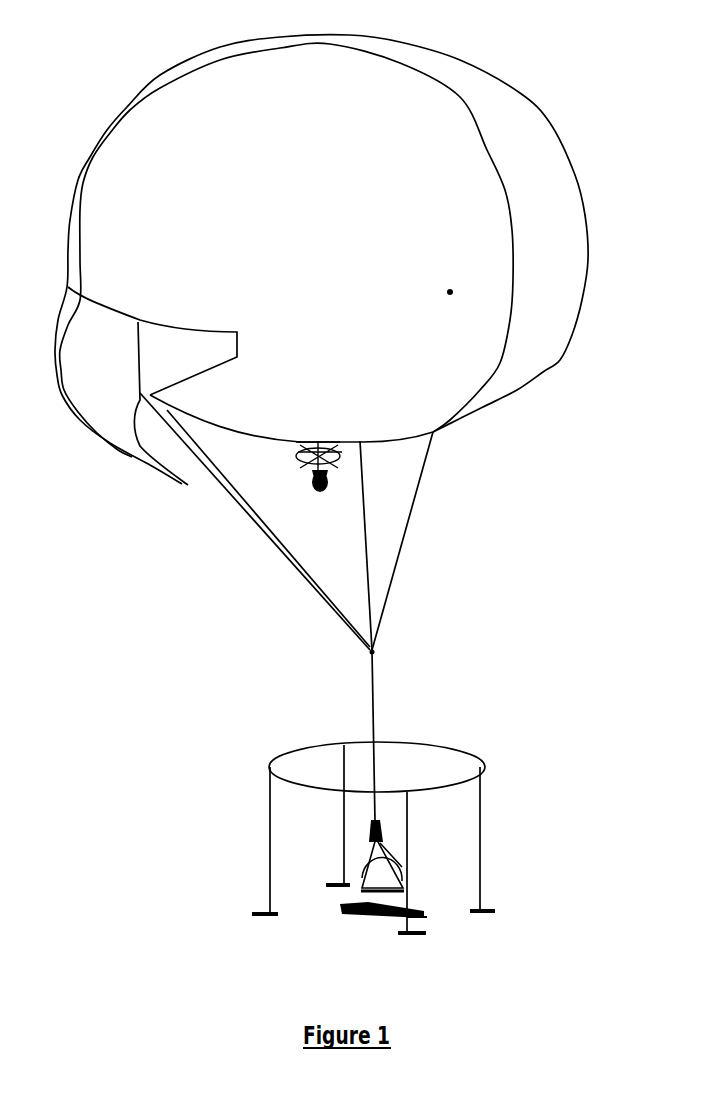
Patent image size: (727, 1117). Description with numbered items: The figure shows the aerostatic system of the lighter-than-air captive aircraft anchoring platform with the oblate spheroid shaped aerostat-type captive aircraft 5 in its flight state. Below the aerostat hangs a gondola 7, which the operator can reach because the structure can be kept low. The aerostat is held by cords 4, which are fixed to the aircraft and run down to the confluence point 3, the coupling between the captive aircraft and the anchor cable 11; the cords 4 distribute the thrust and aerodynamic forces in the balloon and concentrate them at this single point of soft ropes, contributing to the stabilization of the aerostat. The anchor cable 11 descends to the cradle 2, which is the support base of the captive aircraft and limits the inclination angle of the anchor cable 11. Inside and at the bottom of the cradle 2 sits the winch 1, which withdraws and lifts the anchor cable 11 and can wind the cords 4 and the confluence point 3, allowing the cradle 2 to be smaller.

The winch 1 is at (335, 905).
The cradle 2 is at (489, 809).
The confluence point 3 is at (360, 656).
The cords 4 is at (258, 524).
The oblate spheroid shaped aerostat-type captive aircraft 5 is at (500, 117).
The gondola 7 is at (342, 484).
The anchor cable 11 is at (380, 699).